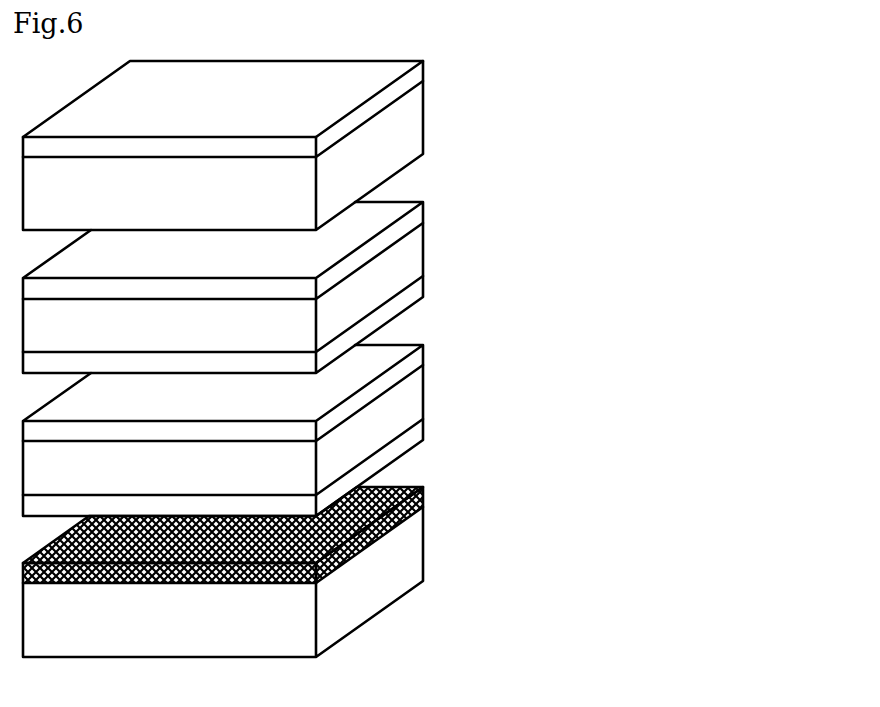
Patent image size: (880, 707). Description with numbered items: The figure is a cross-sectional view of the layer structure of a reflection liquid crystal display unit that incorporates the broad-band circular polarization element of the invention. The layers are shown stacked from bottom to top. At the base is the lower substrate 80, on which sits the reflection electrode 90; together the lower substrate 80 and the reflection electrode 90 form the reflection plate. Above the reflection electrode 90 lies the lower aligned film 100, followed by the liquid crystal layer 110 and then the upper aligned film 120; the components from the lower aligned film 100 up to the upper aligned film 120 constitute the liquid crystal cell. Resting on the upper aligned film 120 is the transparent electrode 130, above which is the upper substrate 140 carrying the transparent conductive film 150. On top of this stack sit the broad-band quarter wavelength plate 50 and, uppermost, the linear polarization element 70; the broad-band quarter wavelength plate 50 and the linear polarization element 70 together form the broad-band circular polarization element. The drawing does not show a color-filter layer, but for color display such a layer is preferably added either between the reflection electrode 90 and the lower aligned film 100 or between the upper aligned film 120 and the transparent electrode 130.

The linear polarization element 70 is at (412, 77).
The broad-band 1/4 wavelength plate 50 is at (395, 136).
The transparent conductive film 150 is at (395, 229).
The upper substrate 140 is at (395, 267).
The transparent electrode 130 is at (395, 305).
The upper aligned film 120 is at (395, 372).
The liquid crystal layer 110 is at (395, 410).
The lower aligned film 100 is at (395, 450).
The reflection electrode 90 is at (423, 505).
The lower substrate 80 is at (395, 560).